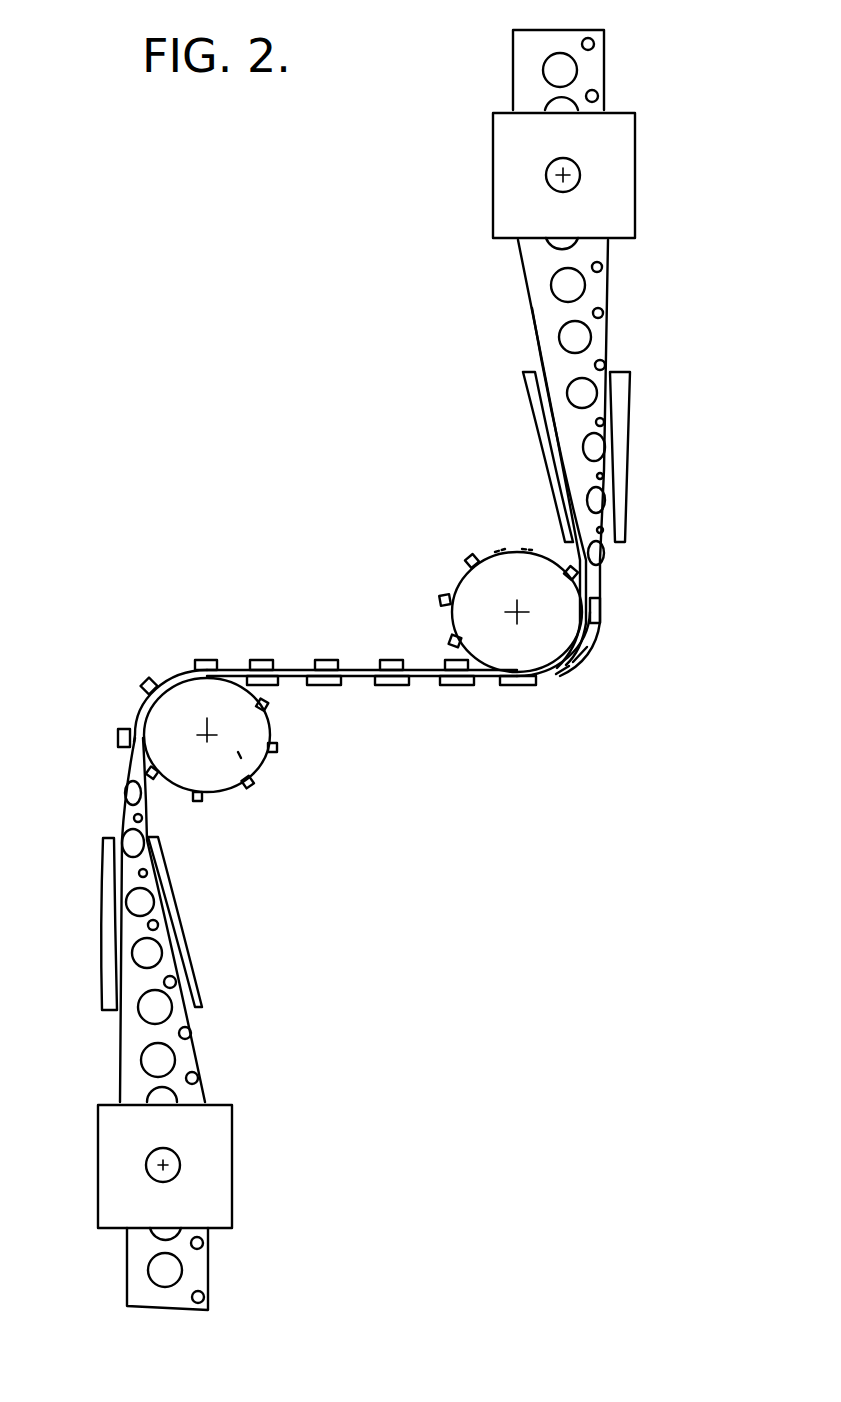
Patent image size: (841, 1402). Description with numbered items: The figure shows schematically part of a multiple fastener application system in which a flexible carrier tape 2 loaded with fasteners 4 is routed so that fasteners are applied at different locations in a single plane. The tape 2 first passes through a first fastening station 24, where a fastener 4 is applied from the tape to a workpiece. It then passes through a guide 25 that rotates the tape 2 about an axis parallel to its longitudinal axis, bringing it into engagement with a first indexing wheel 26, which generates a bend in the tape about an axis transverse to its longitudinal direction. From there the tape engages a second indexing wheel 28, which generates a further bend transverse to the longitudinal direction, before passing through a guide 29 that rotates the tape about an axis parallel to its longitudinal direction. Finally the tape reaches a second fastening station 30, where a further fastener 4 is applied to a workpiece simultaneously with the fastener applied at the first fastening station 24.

The flexible carrier tape 2 is at (127, 1283).
The fasteners 4 is at (317, 663).
The first fastening station 24 is at (215, 1125).
The guide 25 is at (173, 917).
The first indexing wheel 26 is at (243, 755).
The second indexing wheel 28 is at (472, 592).
The guide 29 is at (628, 443).
The second fastening station 30 is at (510, 162).